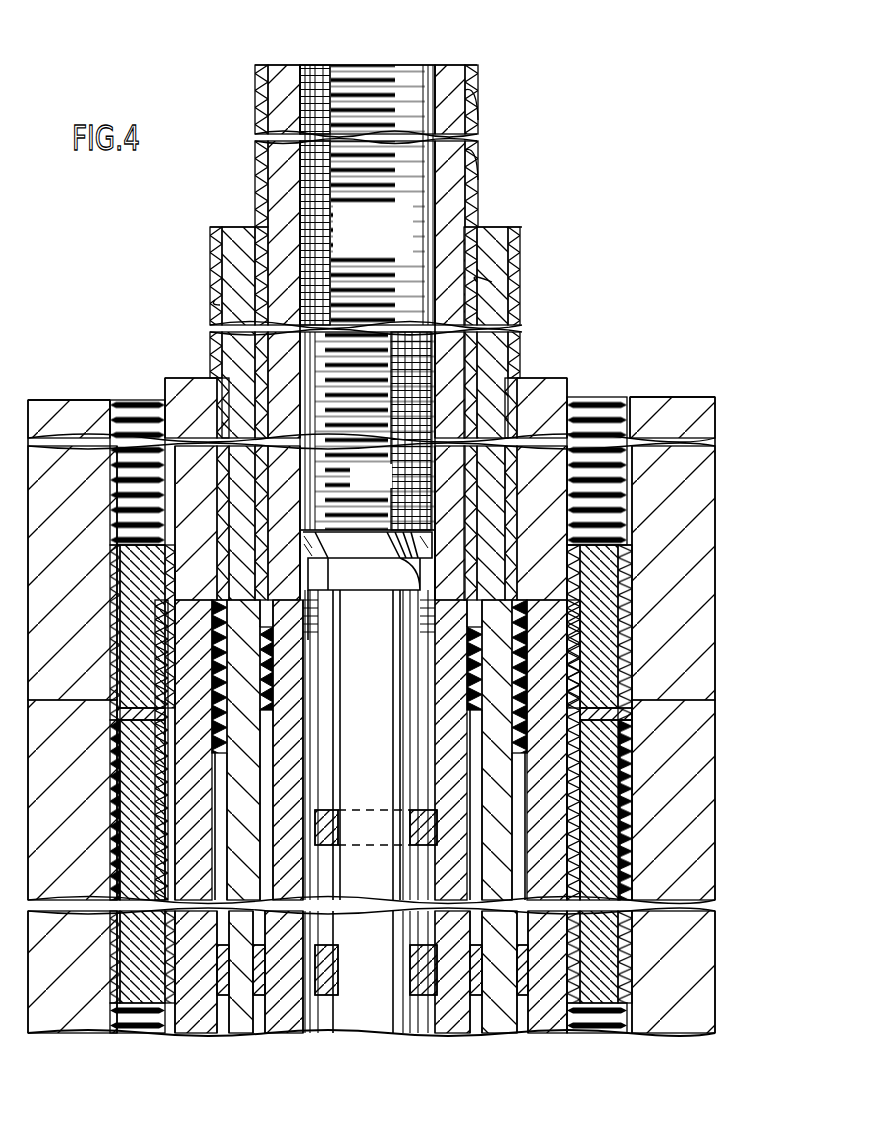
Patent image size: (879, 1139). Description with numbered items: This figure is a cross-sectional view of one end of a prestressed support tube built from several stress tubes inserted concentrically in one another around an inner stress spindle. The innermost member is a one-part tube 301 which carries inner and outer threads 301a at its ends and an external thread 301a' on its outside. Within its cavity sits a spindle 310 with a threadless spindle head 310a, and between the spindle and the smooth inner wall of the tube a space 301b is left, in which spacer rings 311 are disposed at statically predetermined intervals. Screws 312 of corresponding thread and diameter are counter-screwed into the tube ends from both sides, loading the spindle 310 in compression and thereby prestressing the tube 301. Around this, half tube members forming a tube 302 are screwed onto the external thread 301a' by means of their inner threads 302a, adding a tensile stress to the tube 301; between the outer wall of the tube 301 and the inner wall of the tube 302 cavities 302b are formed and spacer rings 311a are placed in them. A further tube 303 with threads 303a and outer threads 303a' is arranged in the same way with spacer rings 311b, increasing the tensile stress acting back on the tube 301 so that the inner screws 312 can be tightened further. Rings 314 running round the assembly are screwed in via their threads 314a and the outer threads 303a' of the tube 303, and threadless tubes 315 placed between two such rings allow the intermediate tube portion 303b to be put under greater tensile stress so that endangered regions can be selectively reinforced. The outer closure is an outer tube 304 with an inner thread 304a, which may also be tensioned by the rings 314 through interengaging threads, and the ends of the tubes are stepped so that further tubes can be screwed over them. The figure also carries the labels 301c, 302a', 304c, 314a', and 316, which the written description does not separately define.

The one-part tube 301 is at (257, 158).
The inner thread 301a is at (508, 105).
The external thread 301a' is at (510, 163).
The space 301b is at (417, 746).
The bolt bore 301c is at (398, 222).
The tube 302 is at (223, 254).
The inner thread 302a is at (528, 266).
The nut outer thread lower portion 302a' is at (368, 292).
The cavities 302b is at (235, 765).
The further tube 303 is at (180, 385).
The thread 303a is at (372, 616).
The outer thread 303a' is at (350, 515).
The intermediate tube portion 303b is at (220, 797).
The outer tube 304 is at (70, 584).
The inner thread 304a is at (120, 400).
The housing thread 304c is at (116, 475).
The spindle 310 is at (377, 704).
The threadless spindle head 310a is at (385, 590).
The spacer rings 311 is at (415, 818).
The spacer rings 311a is at (262, 1030).
The spacer rings 311b is at (222, 1030).
The screws 312 is at (386, 487).
The rings 314 is at (115, 614).
The thread 314a is at (403, 774).
The ring inner thread 314a' is at (376, 835).
The threadless tubes 315 is at (130, 822).
The washer 316 is at (120, 715).